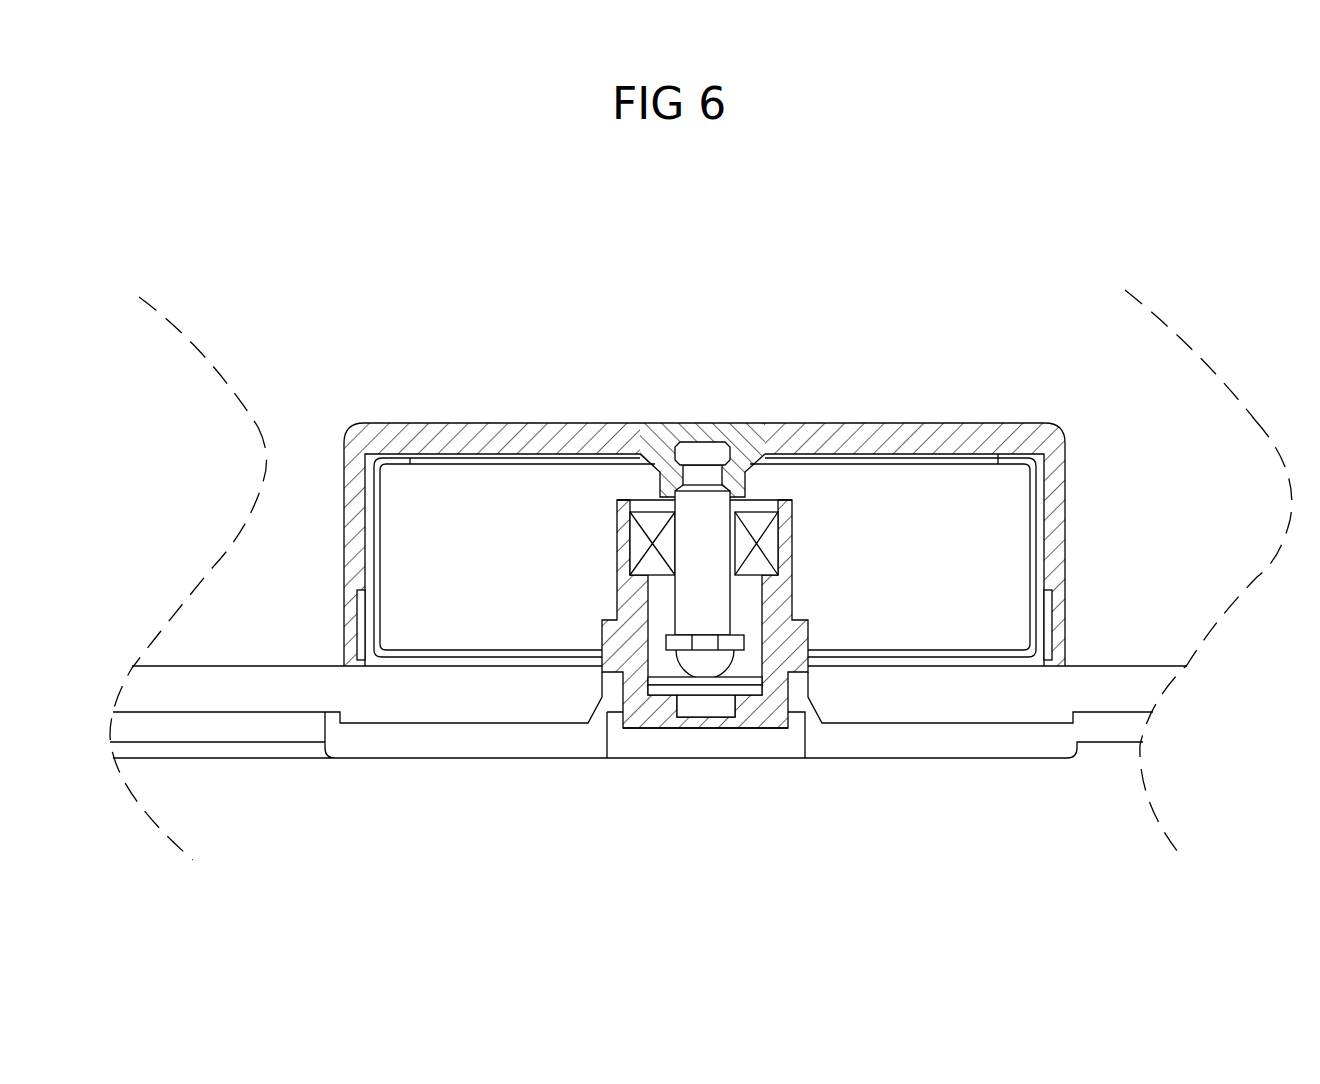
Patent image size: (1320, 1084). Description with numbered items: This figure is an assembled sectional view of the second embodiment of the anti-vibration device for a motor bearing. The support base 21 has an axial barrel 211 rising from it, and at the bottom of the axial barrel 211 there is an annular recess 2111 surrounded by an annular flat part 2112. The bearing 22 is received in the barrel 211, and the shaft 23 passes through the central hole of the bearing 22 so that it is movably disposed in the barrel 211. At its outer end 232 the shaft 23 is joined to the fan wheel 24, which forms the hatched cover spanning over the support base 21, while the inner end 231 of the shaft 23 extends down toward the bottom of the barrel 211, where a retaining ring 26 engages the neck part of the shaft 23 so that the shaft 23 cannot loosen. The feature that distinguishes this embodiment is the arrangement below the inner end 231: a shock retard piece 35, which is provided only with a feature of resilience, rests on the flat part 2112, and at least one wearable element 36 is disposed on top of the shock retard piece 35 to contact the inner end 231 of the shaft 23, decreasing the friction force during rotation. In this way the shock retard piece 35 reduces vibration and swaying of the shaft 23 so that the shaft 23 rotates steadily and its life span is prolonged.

The support base 21 is at (966, 738).
The bearing 22 is at (770, 538).
The shaft 23 is at (781, 618).
The fan wheel 24 is at (560, 423).
The retaining ring 26 is at (677, 640).
The shock retard piece 35 is at (685, 692).
The wearable element 36 is at (667, 682).
The axial barrel 211 is at (732, 599).
The inner end 231 is at (710, 663).
The outer end 232 is at (720, 453).
The annular recess 2111 is at (690, 714).
The annular flat part 2112 is at (752, 700).